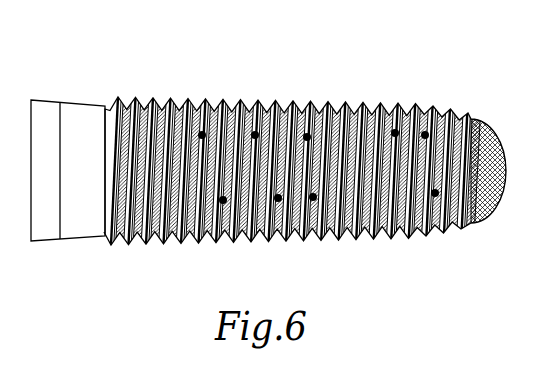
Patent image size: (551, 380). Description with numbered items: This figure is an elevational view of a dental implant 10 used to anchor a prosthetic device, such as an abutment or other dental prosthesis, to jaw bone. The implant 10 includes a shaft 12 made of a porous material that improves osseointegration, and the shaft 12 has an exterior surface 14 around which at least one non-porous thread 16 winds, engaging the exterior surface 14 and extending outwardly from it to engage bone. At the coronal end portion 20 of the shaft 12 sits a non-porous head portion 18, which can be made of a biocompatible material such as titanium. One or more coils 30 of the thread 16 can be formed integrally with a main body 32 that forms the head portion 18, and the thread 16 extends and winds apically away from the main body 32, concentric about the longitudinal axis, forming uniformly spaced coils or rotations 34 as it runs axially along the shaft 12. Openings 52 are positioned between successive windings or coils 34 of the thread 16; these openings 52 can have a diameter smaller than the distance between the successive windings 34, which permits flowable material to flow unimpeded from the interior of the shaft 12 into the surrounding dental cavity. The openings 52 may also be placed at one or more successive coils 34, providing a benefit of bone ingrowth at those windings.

The implant 10 is at (463, 71).
The shaft 12 is at (299, 89).
The exterior surface 14 is at (472, 119).
The non-porous thread 16 is at (458, 233).
The non-porous head portion 18 is at (38, 100).
The coronal end portion 20 is at (160, 108).
The coils 30 is at (137, 97).
The main body 32 is at (77, 241).
The coils or rotations 34 is at (353, 99).
The openings 52 is at (204, 106).